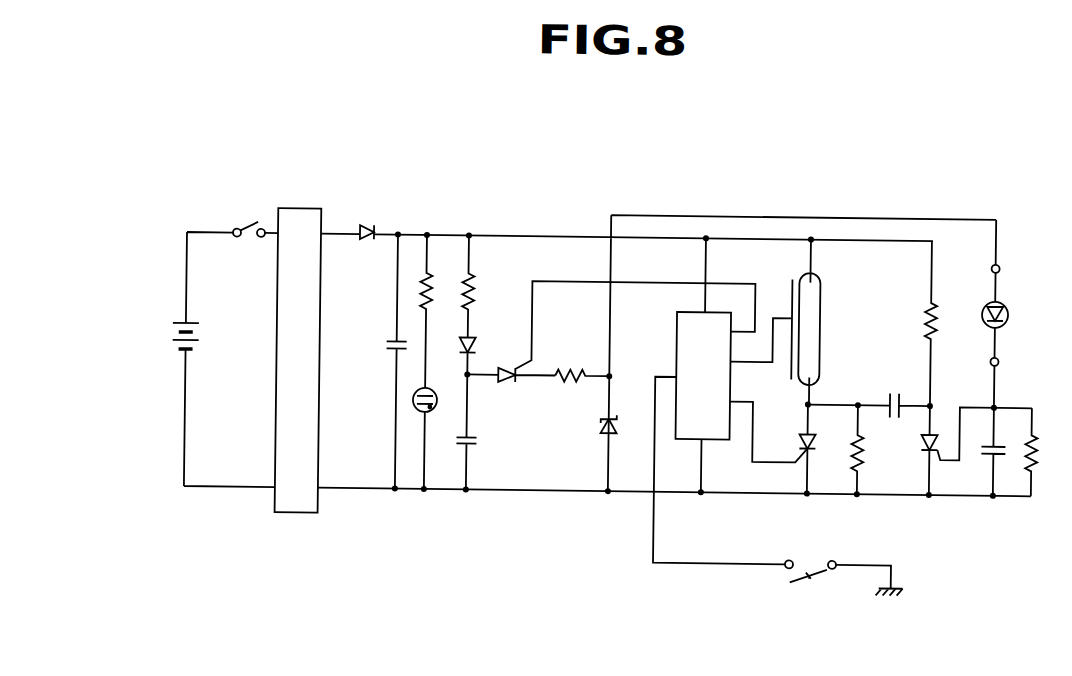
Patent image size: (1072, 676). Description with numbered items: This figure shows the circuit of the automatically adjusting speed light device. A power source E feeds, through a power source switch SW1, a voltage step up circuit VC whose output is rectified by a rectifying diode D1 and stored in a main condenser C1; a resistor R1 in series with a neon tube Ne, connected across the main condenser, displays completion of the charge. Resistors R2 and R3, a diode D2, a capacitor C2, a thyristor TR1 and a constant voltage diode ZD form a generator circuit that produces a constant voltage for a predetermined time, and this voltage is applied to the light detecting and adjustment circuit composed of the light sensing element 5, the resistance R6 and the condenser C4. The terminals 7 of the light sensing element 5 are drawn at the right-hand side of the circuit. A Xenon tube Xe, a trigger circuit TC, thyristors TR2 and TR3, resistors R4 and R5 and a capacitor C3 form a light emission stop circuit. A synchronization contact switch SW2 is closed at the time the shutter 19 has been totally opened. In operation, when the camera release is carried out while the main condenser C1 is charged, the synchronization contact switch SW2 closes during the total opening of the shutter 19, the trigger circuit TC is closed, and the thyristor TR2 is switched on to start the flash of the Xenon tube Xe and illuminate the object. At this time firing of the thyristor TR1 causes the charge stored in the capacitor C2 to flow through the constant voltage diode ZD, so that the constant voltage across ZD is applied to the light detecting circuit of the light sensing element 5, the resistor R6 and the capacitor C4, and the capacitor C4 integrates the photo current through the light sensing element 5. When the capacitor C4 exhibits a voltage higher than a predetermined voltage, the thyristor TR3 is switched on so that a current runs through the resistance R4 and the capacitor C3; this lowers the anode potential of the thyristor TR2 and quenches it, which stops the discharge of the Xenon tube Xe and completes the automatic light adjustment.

The light sensing element 5 is at (1061, 290).
The terminals of LED 7 is at (1012, 352).
The shutter 19 is at (813, 571).
The power source switch SW1 is at (251, 213).
The synchronization contact switch SW2 is at (844, 563).
The power source E is at (192, 338).
The voltage step up circuit VC is at (298, 360).
The rectifying diode D1 is at (369, 219).
The diode D2 is at (478, 353).
The main condenser C1 is at (386, 361).
The capacitor C2 is at (475, 431).
The capacitor C3 is at (907, 392).
The condenser C4 is at (985, 452).
The resistor R1 is at (436, 311).
The resistor R2 is at (479, 286).
The resistor R3 is at (582, 364).
The resistor R4 is at (940, 323).
The resistor R5 is at (848, 450).
The resistance R6 is at (1039, 452).
The neon tube Ne is at (434, 438).
The thyristor TR1 is at (611, 349).
The thyristor TR2 is at (790, 449).
The thyristor TR3 is at (959, 451).
The constant voltage diode ZD is at (621, 428).
The trigger circuit TC is at (731, 401).
The Xenon tube Xe is at (817, 322).